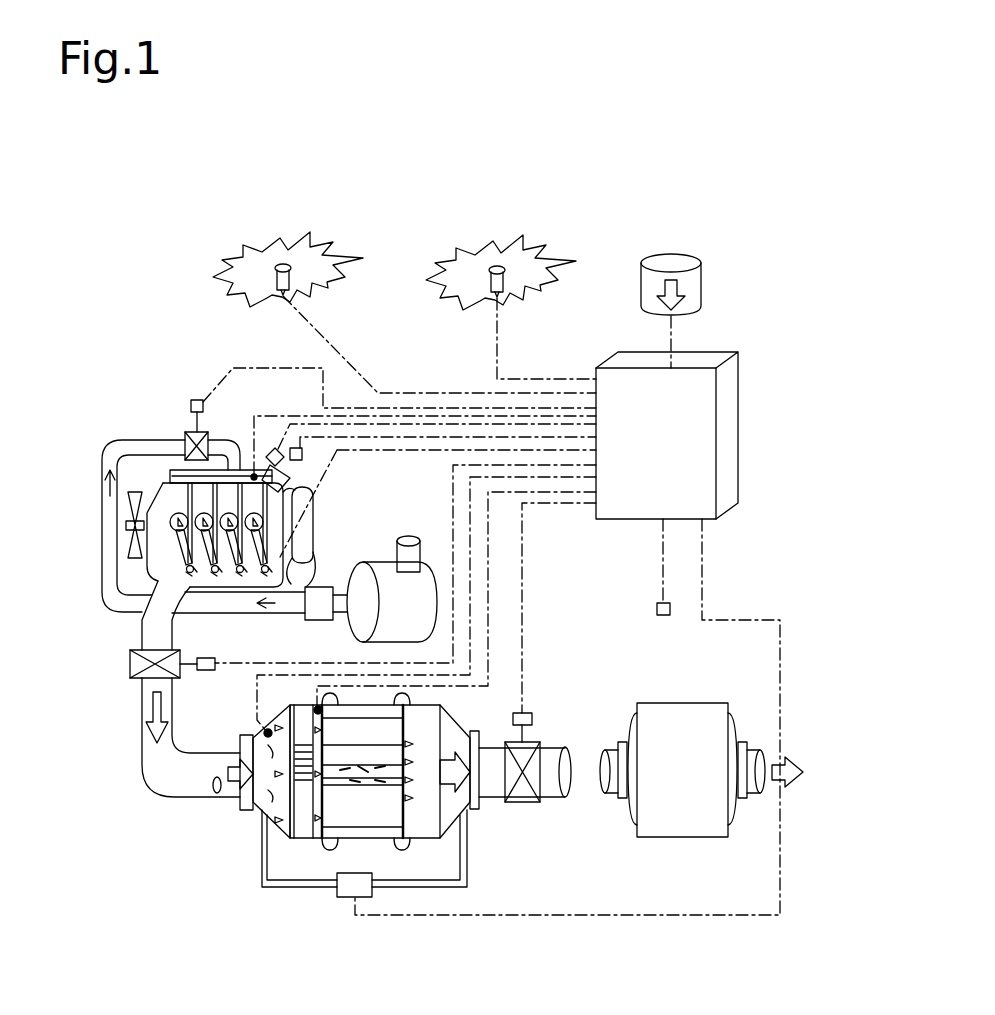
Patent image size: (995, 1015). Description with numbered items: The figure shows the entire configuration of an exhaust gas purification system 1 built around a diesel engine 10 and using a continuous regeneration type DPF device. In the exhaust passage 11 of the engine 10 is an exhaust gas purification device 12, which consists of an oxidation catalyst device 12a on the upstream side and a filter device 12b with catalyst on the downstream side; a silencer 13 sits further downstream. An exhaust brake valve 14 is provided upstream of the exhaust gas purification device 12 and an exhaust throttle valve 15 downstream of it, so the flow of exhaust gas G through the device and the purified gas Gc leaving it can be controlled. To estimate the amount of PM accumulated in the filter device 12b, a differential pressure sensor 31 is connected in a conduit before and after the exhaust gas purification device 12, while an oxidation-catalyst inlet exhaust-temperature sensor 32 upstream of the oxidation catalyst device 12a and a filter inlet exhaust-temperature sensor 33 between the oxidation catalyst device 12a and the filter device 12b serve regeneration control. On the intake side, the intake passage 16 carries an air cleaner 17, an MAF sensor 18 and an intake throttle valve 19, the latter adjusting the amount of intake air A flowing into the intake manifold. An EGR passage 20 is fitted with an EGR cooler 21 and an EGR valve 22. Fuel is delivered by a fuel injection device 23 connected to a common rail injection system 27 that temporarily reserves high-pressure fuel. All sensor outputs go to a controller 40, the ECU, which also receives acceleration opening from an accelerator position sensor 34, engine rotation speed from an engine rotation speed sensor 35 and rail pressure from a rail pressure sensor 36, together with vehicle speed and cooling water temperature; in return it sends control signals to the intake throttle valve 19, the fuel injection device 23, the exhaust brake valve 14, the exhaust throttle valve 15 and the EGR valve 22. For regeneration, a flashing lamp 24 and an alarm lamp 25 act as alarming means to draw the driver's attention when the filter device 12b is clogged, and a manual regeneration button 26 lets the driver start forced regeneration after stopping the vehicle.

The exhaust gas purification system 1 is at (612, 274).
The diesel engine 10 is at (152, 490).
The exhaust passage 11 is at (167, 780).
The exhaust gas purification device 12 is at (366, 836).
The oxidation catalyst device 12a is at (303, 813).
The filter device with catalyst 12b is at (373, 812).
The silencer 13 is at (687, 817).
The exhaust brake valve 14 is at (130, 662).
The exhaust throttle valve 15 is at (528, 745).
The intake passage 16 is at (102, 510).
The air cleaner 17 is at (422, 606).
The MAF sensor 18 is at (325, 584).
The intake throttle valve 19 is at (191, 430).
The EGR passage 20 is at (313, 490).
The EGR cooler 21 is at (311, 518).
The EGR valve 22 is at (272, 450).
The fuel injection device 23 is at (185, 542).
The flashing lamp 24 is at (283, 263).
The alarm lamp 25 is at (497, 265).
The manual regeneration button 26 is at (688, 262).
The common rail injection system 27 is at (178, 472).
The differential pressure sensor 31 is at (347, 887).
The oxidation-catalyst inlet exhaust-temperature sensor 32 is at (266, 730).
The filter inlet exhaust-temperature sensor 33 is at (316, 706).
The accelerator position sensor 34 is at (663, 615).
The engine rotation speed sensor 35 is at (295, 447).
The rail pressure sensor 36 is at (250, 474).
The controller 40 is at (734, 440).
The intake air A is at (104, 478).
The exhaust gas G is at (155, 705).
The purified exhaust gas Gc is at (801, 772).